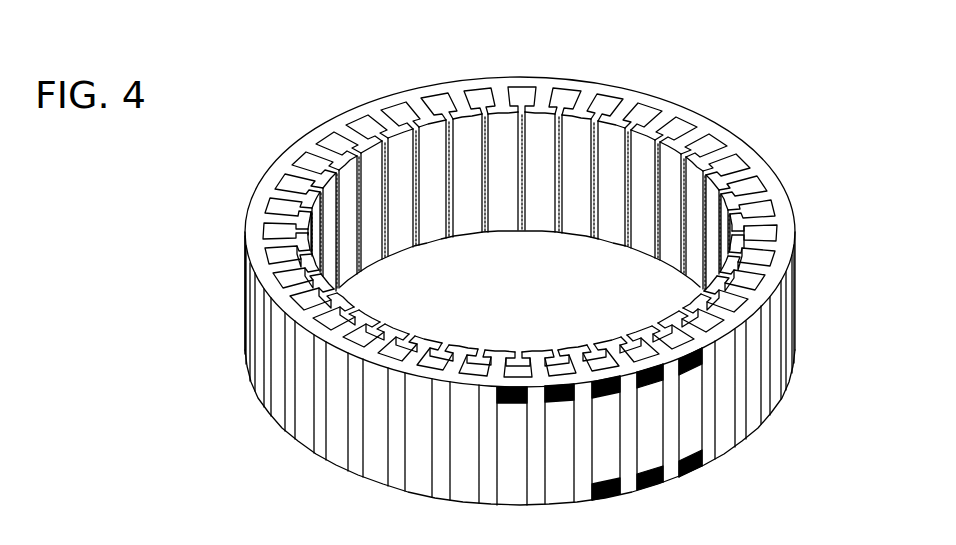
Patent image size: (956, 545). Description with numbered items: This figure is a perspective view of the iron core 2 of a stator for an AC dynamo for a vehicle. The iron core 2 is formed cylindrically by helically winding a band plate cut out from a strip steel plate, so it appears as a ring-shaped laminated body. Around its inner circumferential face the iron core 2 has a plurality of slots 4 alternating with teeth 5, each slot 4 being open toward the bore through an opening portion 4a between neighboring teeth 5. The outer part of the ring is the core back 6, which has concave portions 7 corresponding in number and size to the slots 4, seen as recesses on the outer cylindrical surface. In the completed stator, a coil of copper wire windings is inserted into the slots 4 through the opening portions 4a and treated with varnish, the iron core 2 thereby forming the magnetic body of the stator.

The iron core 2 is at (748, 158).
The slot 4 is at (673, 123).
The opening portion 4a is at (521, 125).
The tooth 5 is at (702, 128).
The core back 6 is at (789, 227).
The concave portion 7 is at (632, 435).